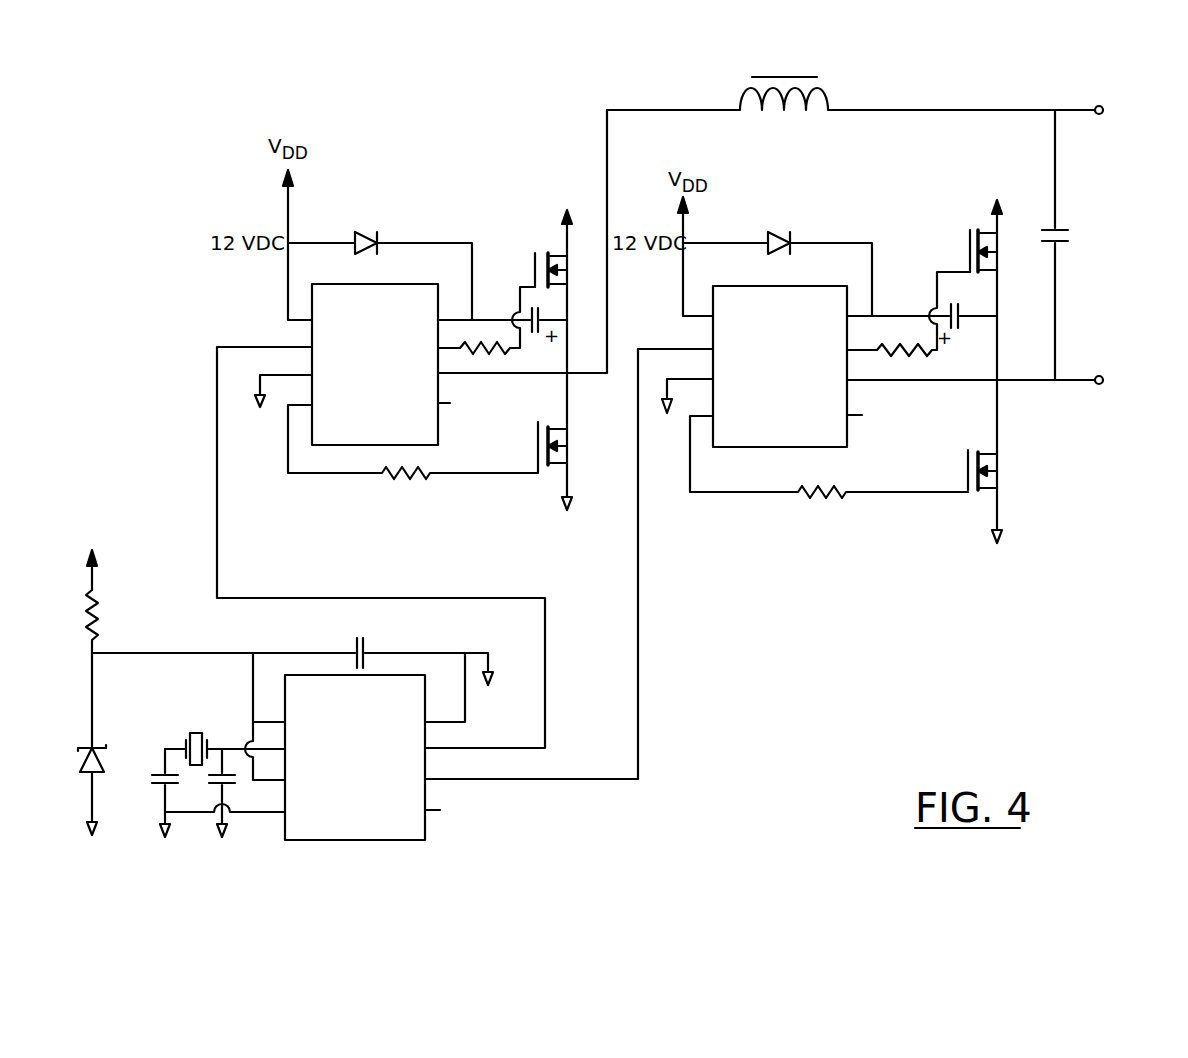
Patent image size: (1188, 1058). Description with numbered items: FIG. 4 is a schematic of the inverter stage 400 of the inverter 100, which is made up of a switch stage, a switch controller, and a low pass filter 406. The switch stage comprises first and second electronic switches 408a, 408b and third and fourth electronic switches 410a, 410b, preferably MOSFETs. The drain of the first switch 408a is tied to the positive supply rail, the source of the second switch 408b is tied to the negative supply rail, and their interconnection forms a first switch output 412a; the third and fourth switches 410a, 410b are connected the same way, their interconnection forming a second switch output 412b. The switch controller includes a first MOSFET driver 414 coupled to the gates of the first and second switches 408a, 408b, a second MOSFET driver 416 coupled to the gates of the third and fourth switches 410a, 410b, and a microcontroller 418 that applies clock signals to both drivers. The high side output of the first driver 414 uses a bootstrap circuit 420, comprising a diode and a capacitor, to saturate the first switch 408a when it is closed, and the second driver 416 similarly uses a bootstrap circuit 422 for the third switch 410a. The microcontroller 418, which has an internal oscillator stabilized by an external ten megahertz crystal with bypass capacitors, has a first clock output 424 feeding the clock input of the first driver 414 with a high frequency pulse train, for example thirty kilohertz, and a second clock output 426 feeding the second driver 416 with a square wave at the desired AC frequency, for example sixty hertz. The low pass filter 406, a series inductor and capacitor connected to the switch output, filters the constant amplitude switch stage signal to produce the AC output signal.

The inverter stage 400 is at (284, 707).
The low pass filter 406 is at (1011, 104).
The first electronic switch 408a is at (534, 262).
The second electronic switch 408b is at (538, 452).
The third electronic switch 410a is at (968, 252).
The fourth electronic switch 410b is at (968, 463).
The first switch output 412a is at (597, 377).
The second switch output 412b is at (1053, 383).
The first MOSFET driver 414 is at (404, 431).
The second MOSFET driver 416 is at (802, 434).
The microcontroller 418 is at (377, 822).
The bootstrap circuit 420 is at (404, 204).
The bootstrap circuit 422 is at (842, 224).
The first clock output 424 is at (547, 680).
The second clock output 426 is at (640, 686).
The inverter 100 is at (1159, 230).